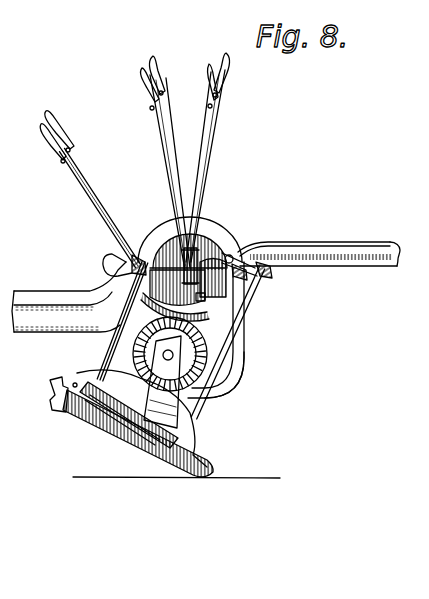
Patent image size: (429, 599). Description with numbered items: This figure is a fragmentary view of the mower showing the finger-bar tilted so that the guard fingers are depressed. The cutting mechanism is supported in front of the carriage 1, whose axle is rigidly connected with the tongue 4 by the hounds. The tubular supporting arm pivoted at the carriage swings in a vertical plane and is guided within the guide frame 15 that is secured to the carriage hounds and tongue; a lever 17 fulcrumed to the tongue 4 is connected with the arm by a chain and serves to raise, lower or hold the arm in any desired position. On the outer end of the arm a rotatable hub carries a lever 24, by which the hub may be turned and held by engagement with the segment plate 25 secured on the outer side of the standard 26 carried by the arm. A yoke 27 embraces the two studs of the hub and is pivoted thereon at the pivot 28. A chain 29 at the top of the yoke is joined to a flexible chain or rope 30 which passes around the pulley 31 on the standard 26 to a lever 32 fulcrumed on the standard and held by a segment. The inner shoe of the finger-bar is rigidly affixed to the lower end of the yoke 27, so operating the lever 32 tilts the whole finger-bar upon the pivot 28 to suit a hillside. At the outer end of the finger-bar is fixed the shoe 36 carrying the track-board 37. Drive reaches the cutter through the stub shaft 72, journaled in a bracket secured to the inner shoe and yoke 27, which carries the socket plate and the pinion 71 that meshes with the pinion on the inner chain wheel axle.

The carriage 1 is at (65, 320).
The tongue 4 is at (354, 265).
The guide frame 15 is at (222, 322).
The lever 17 is at (108, 216).
The lever 24 is at (210, 167).
The segment plate 25 is at (206, 295).
The standard 26 is at (199, 312).
The yoke 27 is at (212, 338).
The pivot 28 is at (207, 360).
The chain 29 is at (233, 254).
The chain or rope 30 is at (226, 255).
The pulley 31 is at (202, 250).
The lever 32 is at (168, 167).
The shoe 36 is at (215, 468).
The track-board 37 is at (58, 385).
The pinion 71 is at (214, 388).
The stub shaft 72 is at (262, 380).